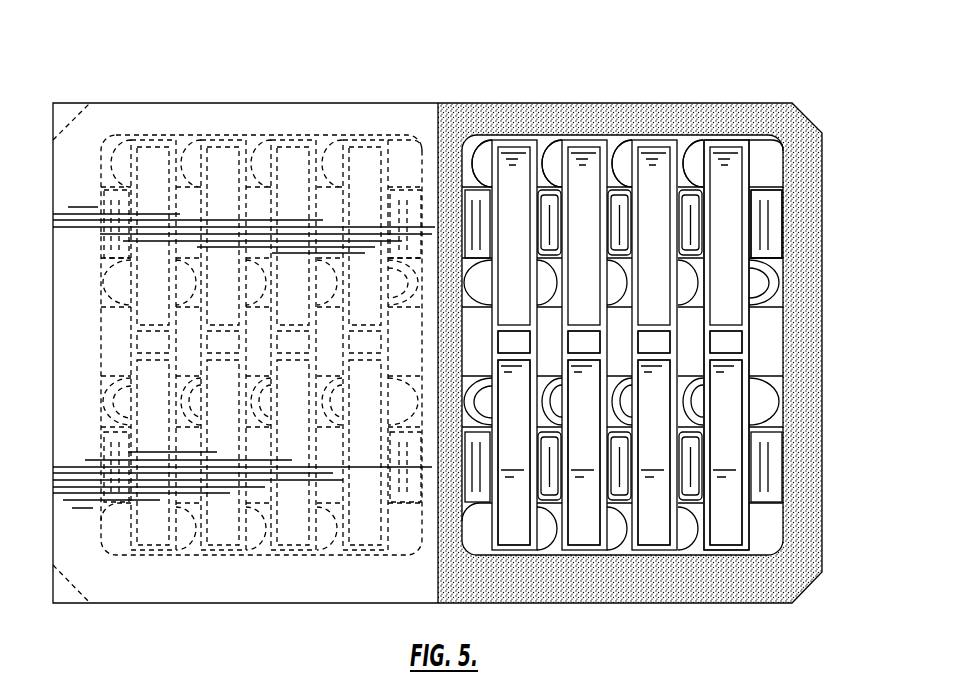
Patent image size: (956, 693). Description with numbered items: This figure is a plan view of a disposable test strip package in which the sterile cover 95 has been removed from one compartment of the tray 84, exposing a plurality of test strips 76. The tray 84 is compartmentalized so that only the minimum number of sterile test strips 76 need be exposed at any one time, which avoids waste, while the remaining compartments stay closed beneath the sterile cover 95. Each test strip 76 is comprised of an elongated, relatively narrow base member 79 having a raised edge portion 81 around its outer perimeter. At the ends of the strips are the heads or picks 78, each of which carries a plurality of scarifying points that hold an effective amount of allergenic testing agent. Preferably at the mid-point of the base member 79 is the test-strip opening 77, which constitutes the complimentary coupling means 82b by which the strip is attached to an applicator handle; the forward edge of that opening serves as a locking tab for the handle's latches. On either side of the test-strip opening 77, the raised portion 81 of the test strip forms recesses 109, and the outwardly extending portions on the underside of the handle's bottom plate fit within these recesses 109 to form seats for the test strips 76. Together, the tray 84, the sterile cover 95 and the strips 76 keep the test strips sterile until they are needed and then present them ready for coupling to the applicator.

The sterile cover 95 is at (403, 120).
The tray 84 is at (483, 115).
The heads or picks 78 is at (612, 150).
The recesses 109 is at (733, 160).
The raised edge portion 81 is at (750, 200).
The test-strip opening 77 is at (657, 340).
The complimentary coupling means 82b is at (730, 345).
The base member 79 is at (730, 410).
The test strips 76 is at (585, 532).